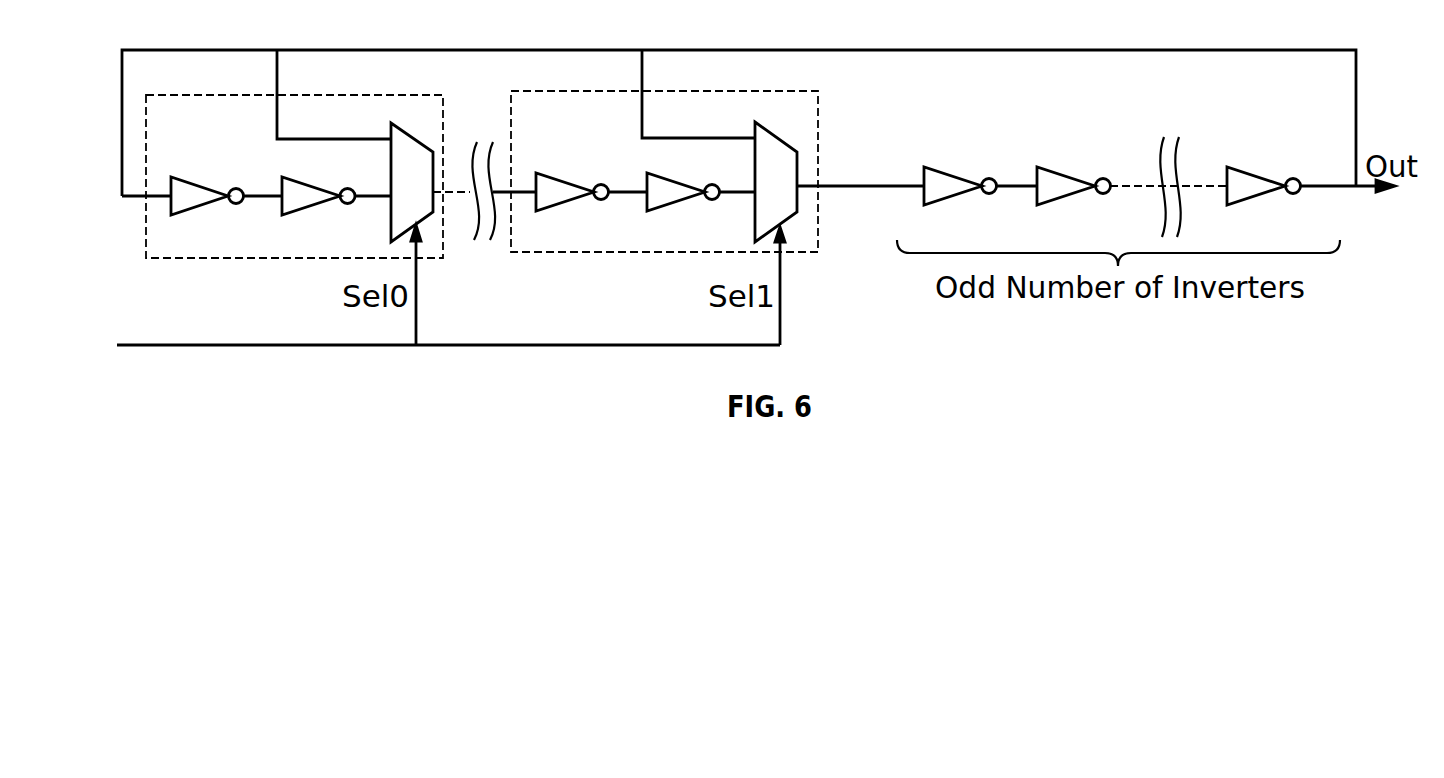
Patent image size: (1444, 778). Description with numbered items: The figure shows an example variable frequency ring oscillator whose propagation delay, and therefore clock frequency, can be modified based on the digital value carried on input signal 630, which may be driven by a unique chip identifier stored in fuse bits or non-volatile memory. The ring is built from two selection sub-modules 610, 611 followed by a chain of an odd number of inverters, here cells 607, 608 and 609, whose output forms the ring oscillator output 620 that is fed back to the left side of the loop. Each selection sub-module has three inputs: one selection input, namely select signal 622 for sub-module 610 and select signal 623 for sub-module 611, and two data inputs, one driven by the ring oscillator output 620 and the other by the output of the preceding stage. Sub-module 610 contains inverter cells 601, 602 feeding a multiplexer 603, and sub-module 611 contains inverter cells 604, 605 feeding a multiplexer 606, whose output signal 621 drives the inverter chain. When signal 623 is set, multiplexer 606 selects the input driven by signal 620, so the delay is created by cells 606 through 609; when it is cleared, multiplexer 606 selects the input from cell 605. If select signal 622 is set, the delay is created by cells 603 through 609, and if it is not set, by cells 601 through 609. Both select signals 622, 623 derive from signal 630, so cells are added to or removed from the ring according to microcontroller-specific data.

The cell 601 is at (190, 212).
The cell 602 is at (312, 212).
The multiplexer 603 is at (417, 138).
The cell 604 is at (562, 208).
The cell 605 is at (673, 208).
The multiplexer 606 is at (780, 137).
The cell 607 is at (952, 172).
The cell 608 is at (1067, 172).
The cell 609 is at (1255, 173).
The selection sub-module 610 is at (218, 93).
The selection sub-module 611 is at (585, 90).
The ring oscillator output 620 is at (1077, 52).
The multiplexer output signal 621 is at (840, 190).
The select signal 622 is at (417, 279).
The select signal 623 is at (783, 272).
The input signal 630 is at (238, 343).